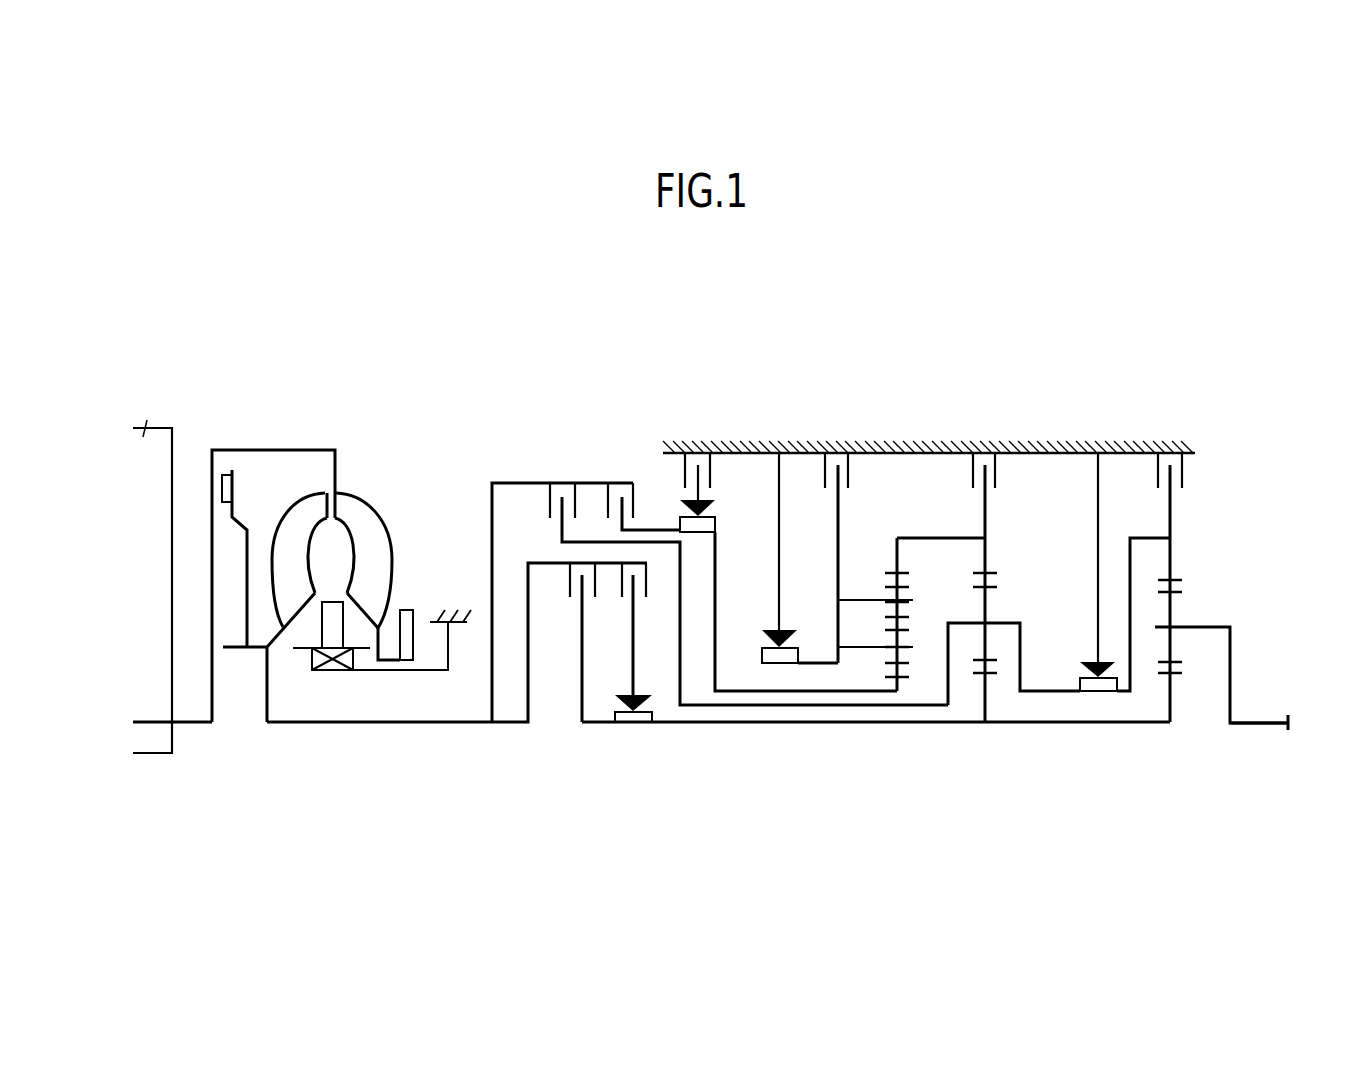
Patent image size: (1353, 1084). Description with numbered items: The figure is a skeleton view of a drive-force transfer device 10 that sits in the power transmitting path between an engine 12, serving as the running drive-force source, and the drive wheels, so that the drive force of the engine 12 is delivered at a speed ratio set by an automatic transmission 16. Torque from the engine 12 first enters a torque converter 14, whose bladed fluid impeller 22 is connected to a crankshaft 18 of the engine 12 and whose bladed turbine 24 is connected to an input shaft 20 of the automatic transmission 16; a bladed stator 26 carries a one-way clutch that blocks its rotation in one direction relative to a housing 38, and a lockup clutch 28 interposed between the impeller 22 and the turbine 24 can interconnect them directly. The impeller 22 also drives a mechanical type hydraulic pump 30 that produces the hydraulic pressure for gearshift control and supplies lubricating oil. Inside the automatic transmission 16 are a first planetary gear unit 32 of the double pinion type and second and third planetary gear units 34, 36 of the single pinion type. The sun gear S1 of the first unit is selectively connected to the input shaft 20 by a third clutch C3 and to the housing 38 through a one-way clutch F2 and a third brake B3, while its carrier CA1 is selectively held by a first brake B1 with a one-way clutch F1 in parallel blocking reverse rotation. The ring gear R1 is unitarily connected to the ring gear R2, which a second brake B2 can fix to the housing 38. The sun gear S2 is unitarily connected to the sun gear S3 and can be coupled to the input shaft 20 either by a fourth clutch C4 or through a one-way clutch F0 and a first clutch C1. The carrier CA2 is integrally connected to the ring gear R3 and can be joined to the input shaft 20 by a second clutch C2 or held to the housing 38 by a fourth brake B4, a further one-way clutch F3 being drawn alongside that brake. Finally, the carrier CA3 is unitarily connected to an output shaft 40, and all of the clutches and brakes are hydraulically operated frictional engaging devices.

The drive-force transfer device 10 is at (467, 258).
The engine 12 is at (145, 426).
The torque converter 14 is at (338, 569).
The automatic transmission 16 is at (1042, 360).
The crankshaft 18 is at (195, 725).
The input shaft 20 is at (375, 724).
The bladed fluid impeller 22 is at (353, 510).
The bladed turbine 24 is at (303, 522).
The bladed stator 26 is at (338, 632).
The lockup clutch 28 is at (220, 488).
The mechanical type hydraulic pump 30 is at (404, 610).
The first planetary gear unit 32 is at (885, 613).
The second planetary gear unit 34 is at (997, 630).
The third planetary gear unit 36 is at (1192, 632).
The housing 38 is at (448, 617).
The output shaft 40 is at (1260, 724).
The first clutch C1 is at (645, 629).
The second clutch C2 is at (747, 582).
The third clutch C3 is at (643, 495).
The fourth clutch C4 is at (570, 642).
The first brake B1 is at (835, 451).
The second brake B2 is at (983, 451).
The third brake B3 is at (695, 457).
The fourth brake B4 is at (1167, 451).
The one-way clutch F0 is at (633, 724).
The one-way clutch F1 is at (785, 558).
The one-way clutch F2 is at (788, 595).
The one-way clutch F3 is at (1108, 572).
The ring gear R1 is at (895, 570).
The ring gear R2 is at (993, 568).
The ring gear R3 is at (1173, 578).
The carrier CA1 is at (835, 613).
The carrier CA2 is at (998, 623).
The carrier CA3 is at (1192, 625).
The sun gear S1 is at (890, 678).
The sun gear S2 is at (990, 677).
The sun gear S3 is at (1175, 673).